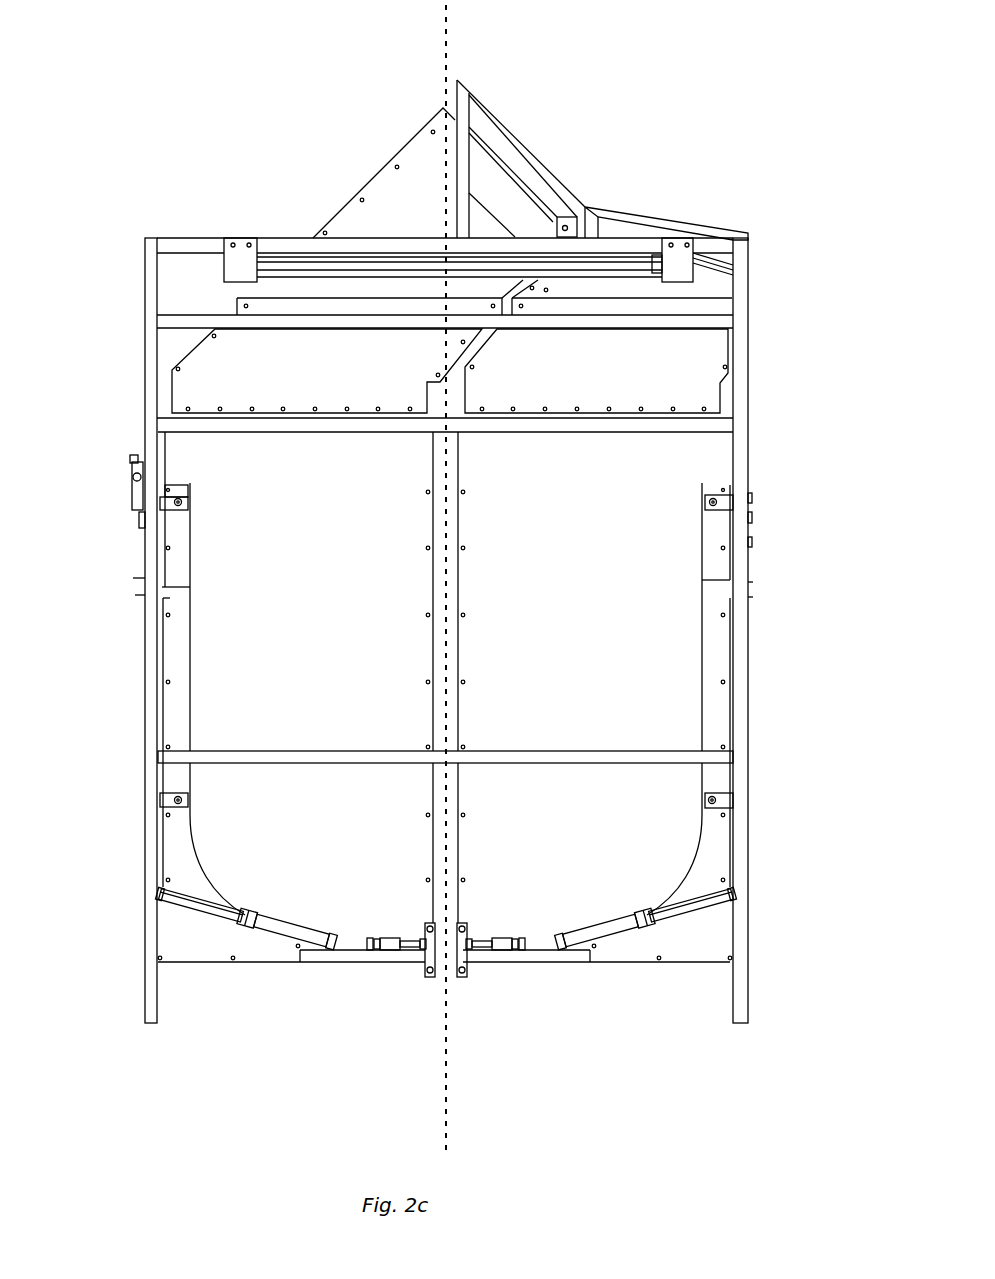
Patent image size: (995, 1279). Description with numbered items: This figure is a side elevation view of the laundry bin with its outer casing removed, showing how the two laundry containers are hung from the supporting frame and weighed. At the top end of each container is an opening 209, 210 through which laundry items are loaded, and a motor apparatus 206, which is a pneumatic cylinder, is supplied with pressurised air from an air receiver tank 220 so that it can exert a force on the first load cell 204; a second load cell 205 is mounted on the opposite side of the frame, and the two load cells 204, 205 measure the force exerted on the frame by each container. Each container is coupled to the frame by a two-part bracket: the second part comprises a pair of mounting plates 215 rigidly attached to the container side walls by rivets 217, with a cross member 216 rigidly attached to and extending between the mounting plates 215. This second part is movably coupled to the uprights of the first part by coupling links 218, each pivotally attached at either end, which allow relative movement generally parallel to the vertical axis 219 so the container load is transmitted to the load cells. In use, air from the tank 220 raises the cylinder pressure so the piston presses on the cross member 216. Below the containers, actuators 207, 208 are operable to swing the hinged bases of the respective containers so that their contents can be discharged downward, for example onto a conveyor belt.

The axis 219 is at (447, 35).
The opening 209 is at (516, 166).
The opening 210 is at (659, 228).
The air receiver tank 220 is at (322, 268).
The motor apparatus 206 is at (130, 487).
The first load cell 204 is at (138, 517).
The second load cell 205 is at (752, 518).
The coupling link 218 is at (178, 502).
The cross member 216 is at (162, 587).
The rivet 217 is at (168, 615).
The mounting plate 215 is at (180, 703).
The actuator 207 is at (278, 927).
The actuator 208 is at (607, 928).